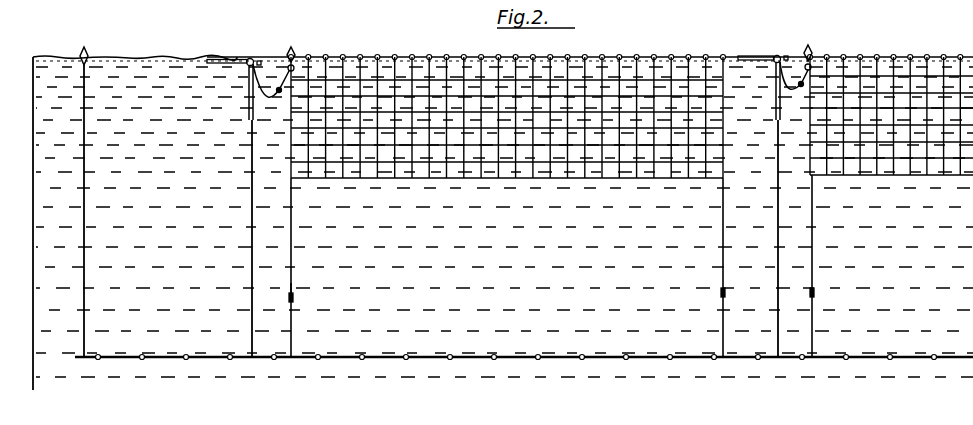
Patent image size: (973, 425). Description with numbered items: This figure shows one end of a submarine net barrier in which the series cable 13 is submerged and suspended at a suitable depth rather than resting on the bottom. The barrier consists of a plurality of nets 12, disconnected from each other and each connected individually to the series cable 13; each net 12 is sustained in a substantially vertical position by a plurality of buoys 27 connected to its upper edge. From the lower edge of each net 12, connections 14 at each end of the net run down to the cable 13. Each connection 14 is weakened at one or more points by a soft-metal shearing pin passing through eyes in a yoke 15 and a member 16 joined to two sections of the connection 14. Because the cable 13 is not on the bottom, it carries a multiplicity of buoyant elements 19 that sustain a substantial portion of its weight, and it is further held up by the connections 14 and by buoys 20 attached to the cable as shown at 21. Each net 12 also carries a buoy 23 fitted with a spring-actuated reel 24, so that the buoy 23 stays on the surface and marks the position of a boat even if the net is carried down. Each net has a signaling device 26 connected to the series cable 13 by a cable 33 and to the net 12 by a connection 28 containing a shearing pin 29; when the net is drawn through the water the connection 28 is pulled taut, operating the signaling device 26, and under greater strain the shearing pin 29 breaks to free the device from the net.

The net 12 is at (659, 76).
The series cable 13 is at (406, 356).
The connection 14 is at (293, 258).
The yoke 15 is at (296, 298).
The member 16 is at (298, 290).
The buoyant element 19 is at (496, 356).
The buoy 20 is at (87, 50).
The buoy connection 21 is at (85, 200).
The buoy 23 is at (294, 53).
The spring-actuated reel 24 is at (287, 69).
The signaling device 26 is at (249, 58).
The buoy 27 is at (412, 57).
The connection 28 is at (265, 98).
The shearing pin 29 is at (279, 92).
The cable 33 is at (250, 256).